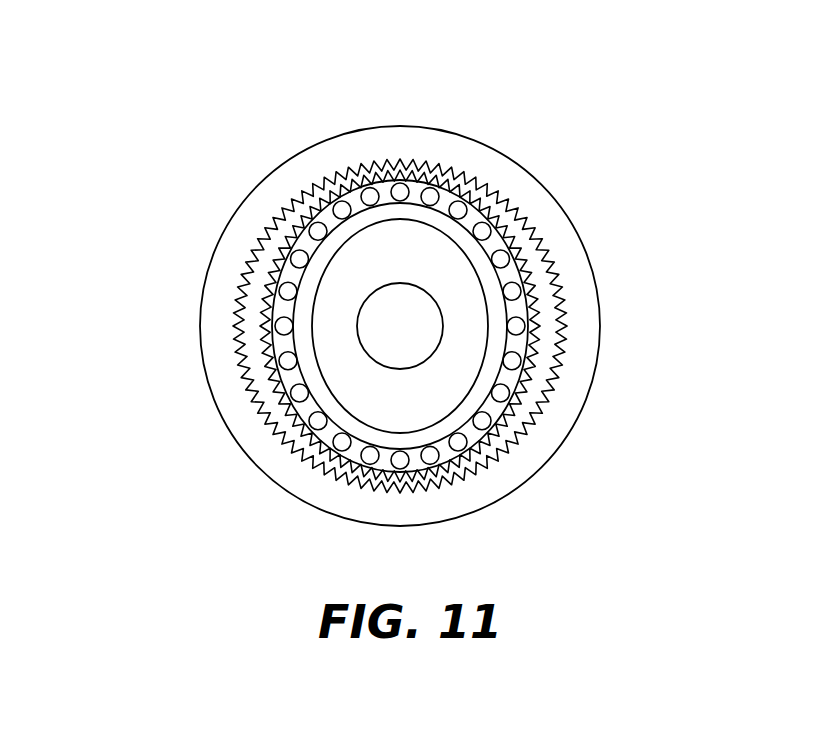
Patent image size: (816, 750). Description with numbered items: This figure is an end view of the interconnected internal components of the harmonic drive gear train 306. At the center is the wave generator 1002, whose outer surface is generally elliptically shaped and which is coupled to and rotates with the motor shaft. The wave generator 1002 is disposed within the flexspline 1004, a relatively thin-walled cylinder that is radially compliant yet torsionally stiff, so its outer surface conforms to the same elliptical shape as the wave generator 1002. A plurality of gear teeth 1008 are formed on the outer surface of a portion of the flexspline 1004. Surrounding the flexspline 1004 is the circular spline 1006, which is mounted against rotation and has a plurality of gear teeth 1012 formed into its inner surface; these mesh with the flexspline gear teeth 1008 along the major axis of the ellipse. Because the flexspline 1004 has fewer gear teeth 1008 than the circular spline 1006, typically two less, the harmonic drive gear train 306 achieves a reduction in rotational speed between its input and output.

The harmonic drive gear train 306 is at (193, 138).
The wave generator 1002 is at (403, 228).
The flexspline 1004 is at (535, 363).
The circular spline 1006 is at (542, 448).
The gear teeth 1008 is at (272, 289).
The gear teeth 1012 is at (543, 310).